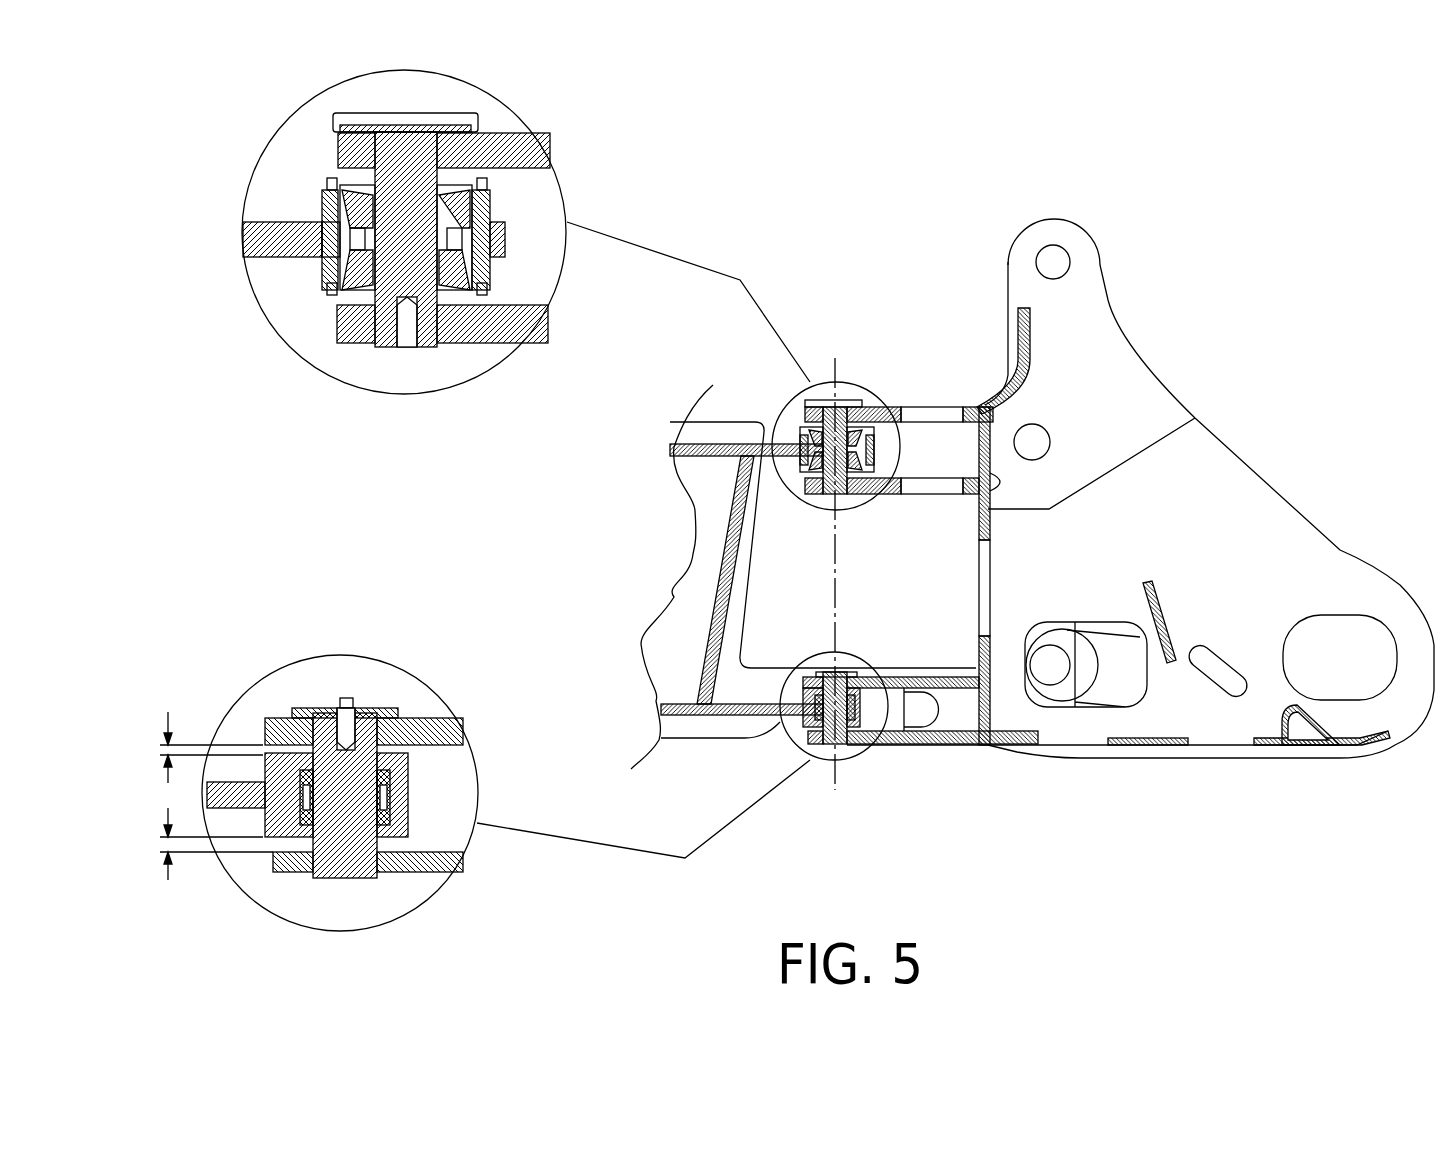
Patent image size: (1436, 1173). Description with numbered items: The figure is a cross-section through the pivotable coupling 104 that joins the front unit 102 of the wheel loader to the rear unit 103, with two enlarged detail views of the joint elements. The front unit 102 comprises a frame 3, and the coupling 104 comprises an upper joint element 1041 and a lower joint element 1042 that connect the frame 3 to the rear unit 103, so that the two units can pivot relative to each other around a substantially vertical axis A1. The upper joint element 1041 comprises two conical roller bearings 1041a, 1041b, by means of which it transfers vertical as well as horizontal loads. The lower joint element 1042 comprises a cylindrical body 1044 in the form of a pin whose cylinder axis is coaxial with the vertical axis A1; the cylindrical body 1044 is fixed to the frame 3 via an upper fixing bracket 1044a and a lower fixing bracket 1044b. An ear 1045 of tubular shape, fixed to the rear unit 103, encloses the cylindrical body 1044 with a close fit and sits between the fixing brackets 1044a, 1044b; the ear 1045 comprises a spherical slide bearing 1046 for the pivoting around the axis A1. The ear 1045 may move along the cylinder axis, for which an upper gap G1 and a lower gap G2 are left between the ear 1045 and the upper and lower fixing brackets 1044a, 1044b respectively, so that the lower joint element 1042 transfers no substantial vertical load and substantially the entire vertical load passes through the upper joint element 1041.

The front unit 102 is at (1218, 495).
The frame 3 is at (1140, 488).
The rear unit 103 is at (692, 602).
The pivotable coupling 104 is at (862, 368).
The upper joint element 1041 is at (490, 260).
The conical roller bearing 1041a is at (335, 210).
The conical roller bearing 1041b is at (330, 262).
The lower joint element 1042 is at (318, 708).
The cylindrical body 1044 is at (345, 862).
The upper fixing bracket 1044a is at (272, 718).
The lower fixing bracket 1044b is at (282, 872).
The ear 1045 is at (408, 788).
The spherical slide bearing 1046 is at (405, 812).
The vertical axis A1 is at (835, 790).
The upper gap G1 is at (196, 747).
The lower gap G2 is at (199, 844).